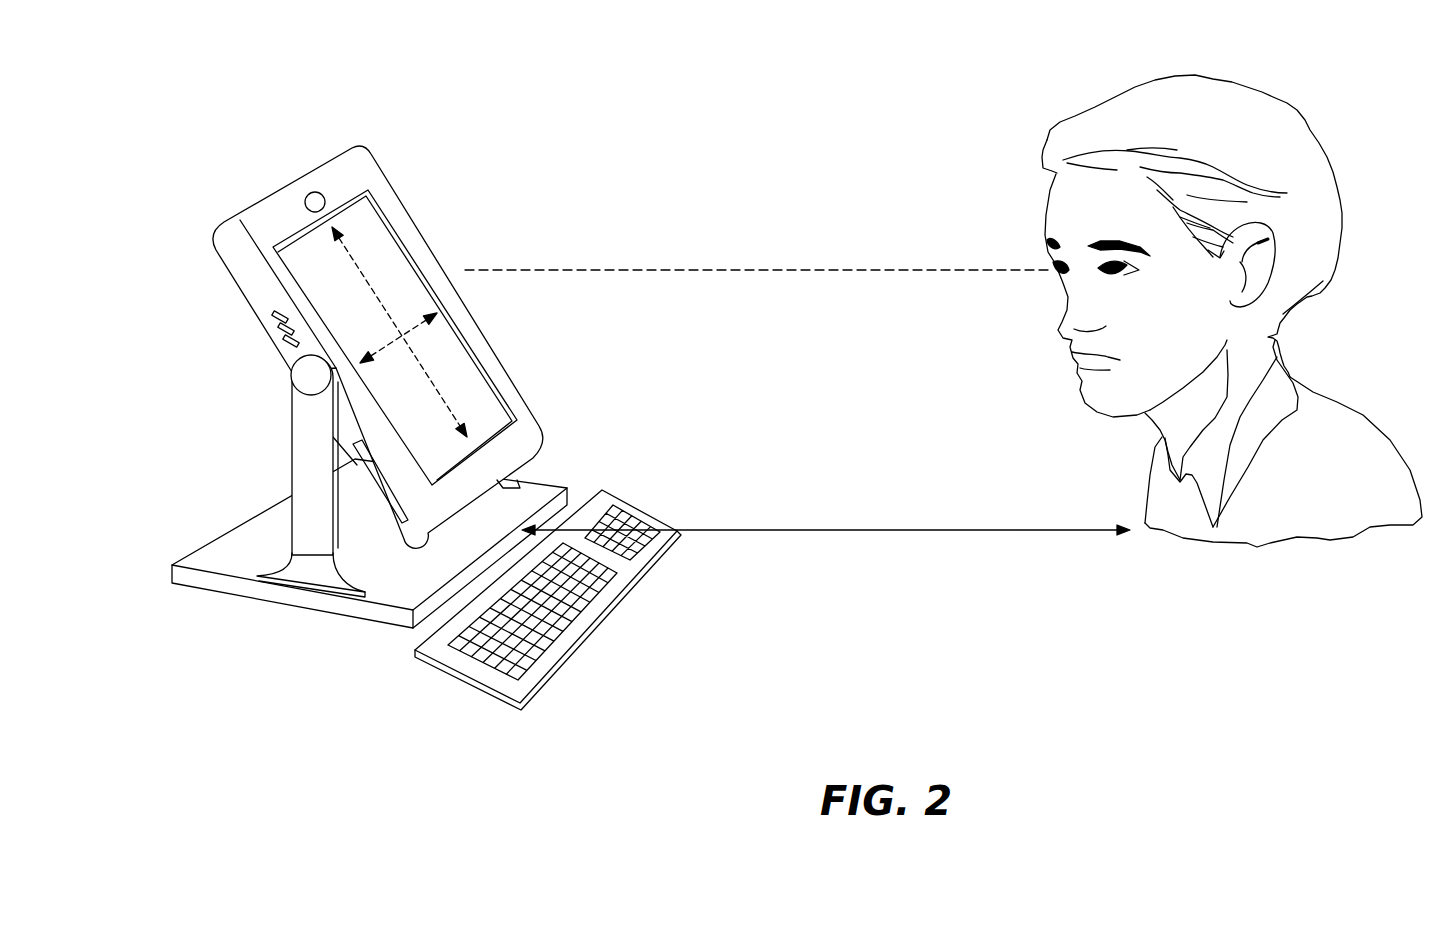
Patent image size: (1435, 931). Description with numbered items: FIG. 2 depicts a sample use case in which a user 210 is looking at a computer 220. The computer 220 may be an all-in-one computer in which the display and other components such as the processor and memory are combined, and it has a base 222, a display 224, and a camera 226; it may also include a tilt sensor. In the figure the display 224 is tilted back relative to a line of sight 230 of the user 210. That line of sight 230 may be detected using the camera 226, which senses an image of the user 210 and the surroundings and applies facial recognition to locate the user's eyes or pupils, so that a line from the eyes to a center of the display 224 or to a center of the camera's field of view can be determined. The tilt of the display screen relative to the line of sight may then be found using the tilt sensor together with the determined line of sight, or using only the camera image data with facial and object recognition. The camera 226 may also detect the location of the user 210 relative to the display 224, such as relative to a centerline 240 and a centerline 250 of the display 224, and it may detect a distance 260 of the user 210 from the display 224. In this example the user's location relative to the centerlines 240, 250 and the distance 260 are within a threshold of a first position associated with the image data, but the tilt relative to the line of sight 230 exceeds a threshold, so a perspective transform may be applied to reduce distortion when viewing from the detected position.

The user 210 is at (1307, 503).
The computer 220 is at (162, 250).
The base 222 is at (405, 587).
The display 224 is at (378, 252).
The camera 226 is at (318, 194).
The line of sight 230 is at (722, 270).
The centerline 240 is at (350, 258).
The centerline 250 is at (390, 347).
The distance 260 is at (978, 546).